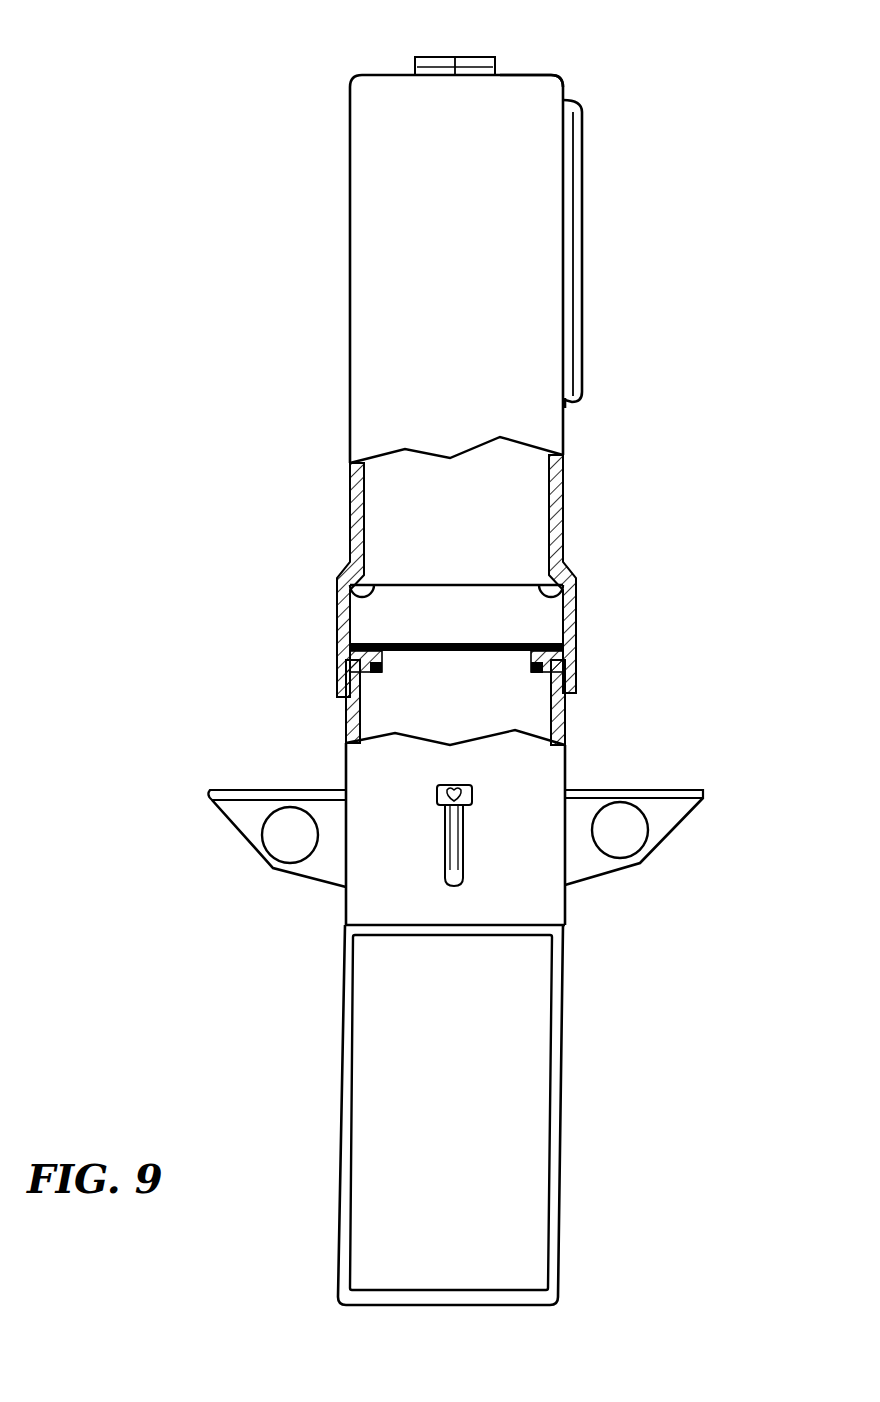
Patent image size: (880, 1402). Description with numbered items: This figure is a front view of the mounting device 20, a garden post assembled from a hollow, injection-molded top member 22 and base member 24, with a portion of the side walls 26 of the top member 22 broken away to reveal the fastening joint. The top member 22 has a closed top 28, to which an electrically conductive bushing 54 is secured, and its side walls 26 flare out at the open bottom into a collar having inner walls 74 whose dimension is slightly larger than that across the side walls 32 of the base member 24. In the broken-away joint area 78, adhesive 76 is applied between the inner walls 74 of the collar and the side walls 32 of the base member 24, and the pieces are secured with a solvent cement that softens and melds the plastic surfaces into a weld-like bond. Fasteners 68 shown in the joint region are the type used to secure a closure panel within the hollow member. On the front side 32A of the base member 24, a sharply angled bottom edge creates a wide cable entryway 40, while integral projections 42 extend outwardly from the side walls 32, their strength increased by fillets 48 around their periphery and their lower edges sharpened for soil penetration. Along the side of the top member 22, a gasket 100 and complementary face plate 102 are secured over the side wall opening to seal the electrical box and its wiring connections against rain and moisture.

The mounting device 20 is at (184, 483).
The top member 22 is at (349, 236).
The base member 24 is at (346, 768).
The side walls 26 is at (432, 272).
The closed top 28 is at (537, 70).
The side walls 32 is at (577, 704).
The front side 32A is at (500, 902).
The cable entryway 40 is at (515, 1100).
The integral projections 42 is at (240, 818).
The fillets 48 is at (470, 790).
The electrically conductive bushing 54 is at (473, 57).
The fasteners 68 is at (373, 678).
The inner walls 74 is at (368, 597).
The adhesive 76 is at (352, 632).
The joint area 78 is at (578, 622).
The gasket 100 is at (566, 405).
The face plate 102 is at (582, 200).